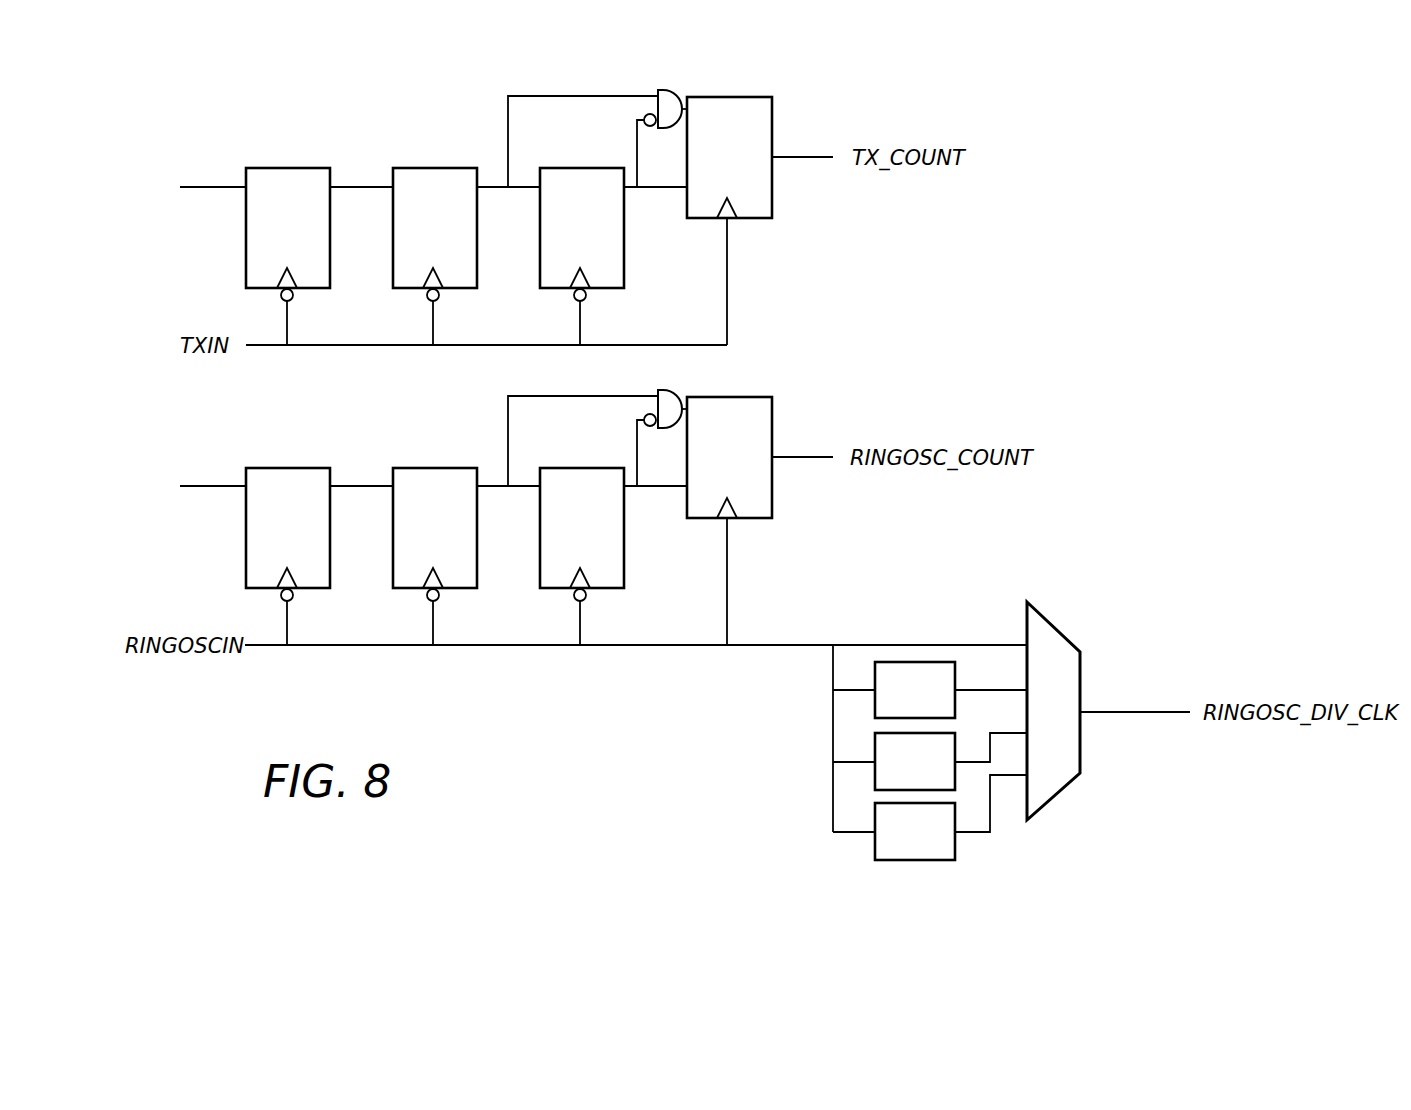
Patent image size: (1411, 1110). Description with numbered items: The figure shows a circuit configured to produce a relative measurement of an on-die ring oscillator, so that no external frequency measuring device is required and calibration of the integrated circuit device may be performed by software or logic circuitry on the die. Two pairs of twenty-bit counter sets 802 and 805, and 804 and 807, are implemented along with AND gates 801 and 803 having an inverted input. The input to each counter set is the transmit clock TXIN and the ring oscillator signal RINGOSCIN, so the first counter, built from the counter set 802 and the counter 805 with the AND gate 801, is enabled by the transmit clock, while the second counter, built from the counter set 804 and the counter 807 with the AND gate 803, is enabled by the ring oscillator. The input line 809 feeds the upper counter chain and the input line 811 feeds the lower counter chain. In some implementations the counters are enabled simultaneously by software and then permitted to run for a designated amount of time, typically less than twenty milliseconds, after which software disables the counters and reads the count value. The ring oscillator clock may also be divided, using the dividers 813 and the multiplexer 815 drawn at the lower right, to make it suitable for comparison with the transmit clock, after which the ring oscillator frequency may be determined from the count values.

The AND gate 801 is at (673, 90).
The counter set 802 is at (283, 168).
The AND gate 803 is at (673, 390).
The counter set 804 is at (283, 468).
The counter set 805 is at (743, 97).
The counter set 807 is at (743, 397).
The TX enable input 809 is at (190, 187).
The ring oscillator enable input 811 is at (190, 485).
The frequency dividers 813 is at (807, 657).
The multiplexer 815 is at (1053, 625).